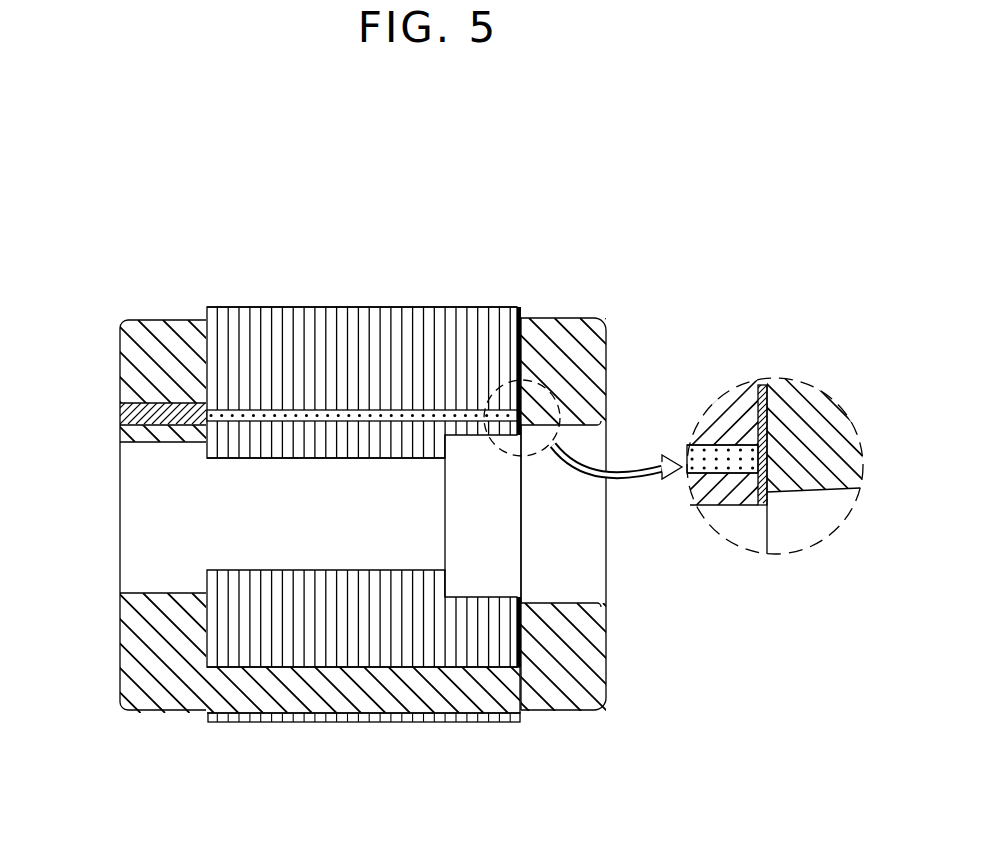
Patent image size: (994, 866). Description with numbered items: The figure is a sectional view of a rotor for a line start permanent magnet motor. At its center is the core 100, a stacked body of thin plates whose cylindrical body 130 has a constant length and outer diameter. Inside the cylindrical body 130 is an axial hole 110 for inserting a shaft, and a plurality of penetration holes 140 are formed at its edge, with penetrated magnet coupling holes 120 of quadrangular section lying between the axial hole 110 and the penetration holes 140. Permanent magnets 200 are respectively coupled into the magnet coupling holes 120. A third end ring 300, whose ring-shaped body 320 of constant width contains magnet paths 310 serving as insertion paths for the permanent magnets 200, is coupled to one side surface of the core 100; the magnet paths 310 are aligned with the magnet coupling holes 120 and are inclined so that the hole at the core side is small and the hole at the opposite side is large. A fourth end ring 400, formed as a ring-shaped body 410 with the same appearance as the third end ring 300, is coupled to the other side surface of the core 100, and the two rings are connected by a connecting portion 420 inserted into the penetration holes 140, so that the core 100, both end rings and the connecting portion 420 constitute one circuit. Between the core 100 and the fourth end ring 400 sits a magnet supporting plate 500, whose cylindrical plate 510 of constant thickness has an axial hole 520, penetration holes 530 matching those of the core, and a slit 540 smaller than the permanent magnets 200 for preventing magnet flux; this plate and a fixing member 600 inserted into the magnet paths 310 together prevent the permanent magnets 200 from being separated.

The core 100 is at (402, 303).
The axial hole 110 is at (223, 464).
The magnet coupling holes 120 is at (331, 307).
The cylindrical body 130 is at (244, 316).
The penetration holes 140 is at (262, 716).
The permanent magnets 200 is at (357, 403).
The third end ring 300 is at (152, 712).
The magnet paths 310 is at (122, 402).
The ring-shaped body 320 is at (153, 320).
The fourth end ring 400 is at (578, 305).
The ring-shaped body 410 is at (538, 337).
The connecting portion 420 is at (455, 695).
The magnet supporting plate 500 is at (531, 366).
The cylindrical plate 510 is at (522, 638).
The axial hole 520 is at (521, 600).
The penetration holes 530 is at (523, 708).
The slit 540 is at (764, 460).
The fixing member 600 is at (127, 432).